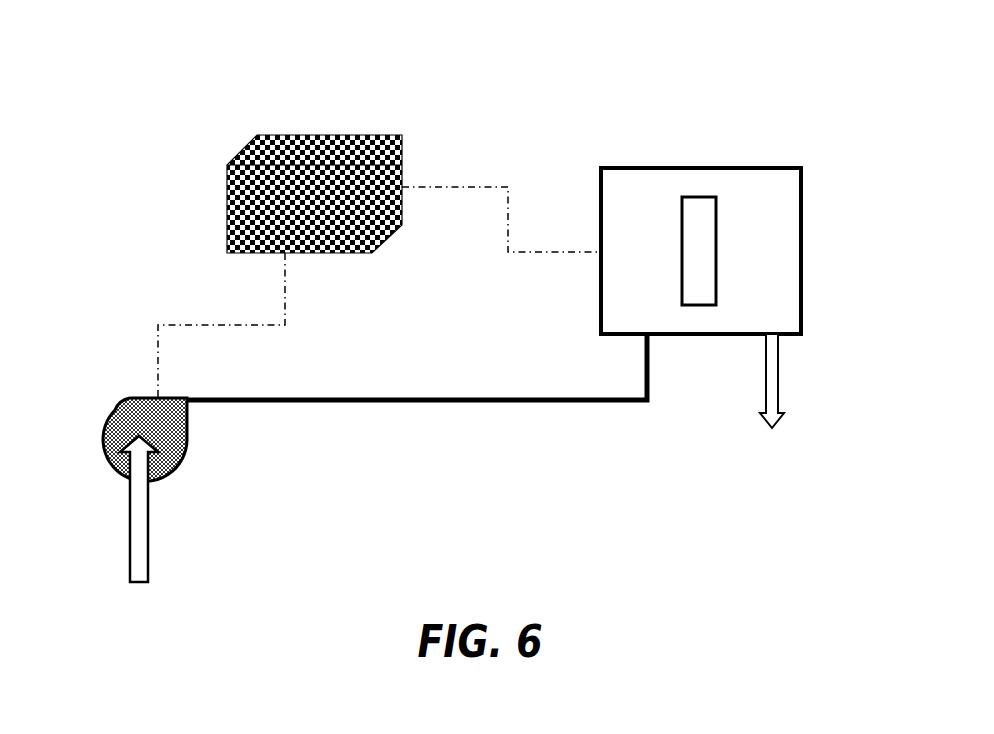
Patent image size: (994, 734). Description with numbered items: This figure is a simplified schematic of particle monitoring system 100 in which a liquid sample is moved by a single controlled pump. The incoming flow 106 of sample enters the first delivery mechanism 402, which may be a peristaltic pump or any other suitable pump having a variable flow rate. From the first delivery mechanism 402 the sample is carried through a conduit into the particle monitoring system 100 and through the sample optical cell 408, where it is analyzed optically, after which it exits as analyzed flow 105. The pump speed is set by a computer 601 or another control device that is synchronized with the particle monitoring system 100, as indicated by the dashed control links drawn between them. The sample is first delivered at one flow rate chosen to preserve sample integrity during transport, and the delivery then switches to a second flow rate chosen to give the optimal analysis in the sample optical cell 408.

The computer 601 is at (226, 215).
The particle monitoring system 100 is at (711, 156).
The sample optical cell 408 is at (803, 302).
The first delivery mechanism 402 is at (126, 397).
The incoming flow 106 is at (160, 521).
The analyzed flow 105 is at (746, 427).